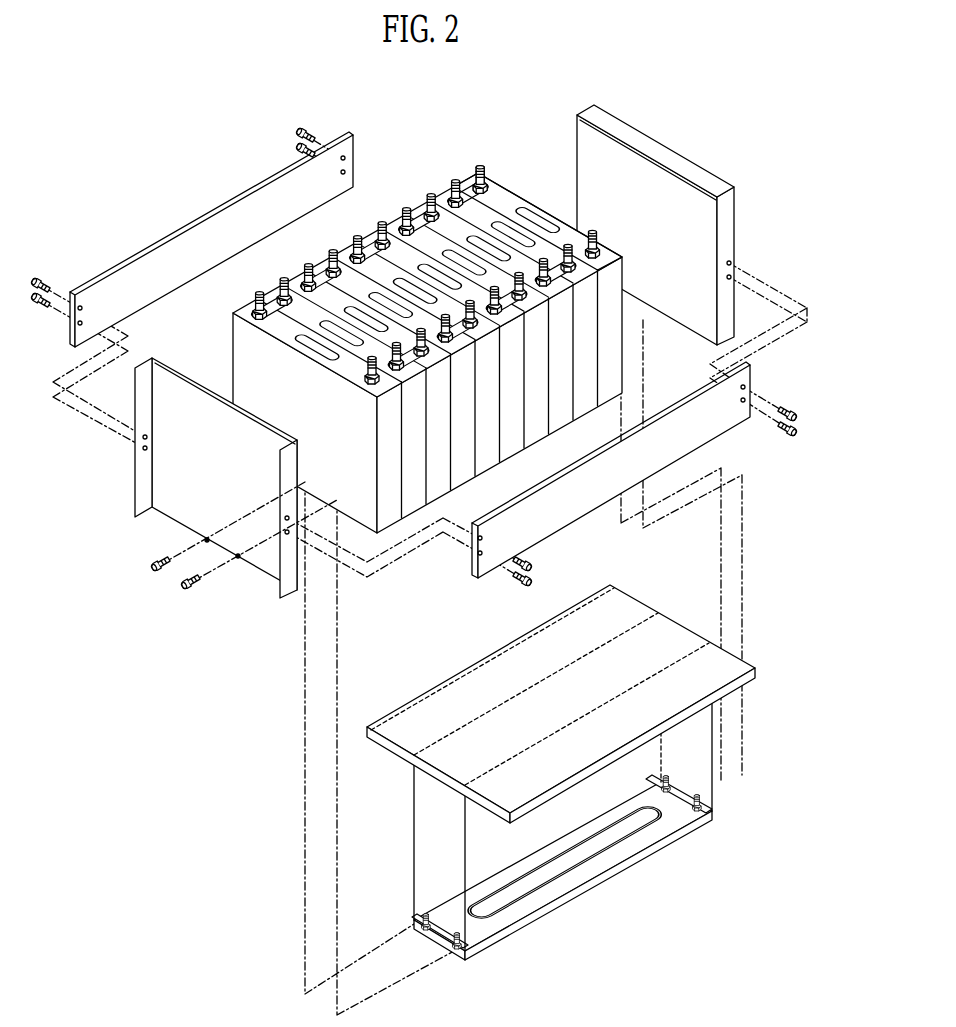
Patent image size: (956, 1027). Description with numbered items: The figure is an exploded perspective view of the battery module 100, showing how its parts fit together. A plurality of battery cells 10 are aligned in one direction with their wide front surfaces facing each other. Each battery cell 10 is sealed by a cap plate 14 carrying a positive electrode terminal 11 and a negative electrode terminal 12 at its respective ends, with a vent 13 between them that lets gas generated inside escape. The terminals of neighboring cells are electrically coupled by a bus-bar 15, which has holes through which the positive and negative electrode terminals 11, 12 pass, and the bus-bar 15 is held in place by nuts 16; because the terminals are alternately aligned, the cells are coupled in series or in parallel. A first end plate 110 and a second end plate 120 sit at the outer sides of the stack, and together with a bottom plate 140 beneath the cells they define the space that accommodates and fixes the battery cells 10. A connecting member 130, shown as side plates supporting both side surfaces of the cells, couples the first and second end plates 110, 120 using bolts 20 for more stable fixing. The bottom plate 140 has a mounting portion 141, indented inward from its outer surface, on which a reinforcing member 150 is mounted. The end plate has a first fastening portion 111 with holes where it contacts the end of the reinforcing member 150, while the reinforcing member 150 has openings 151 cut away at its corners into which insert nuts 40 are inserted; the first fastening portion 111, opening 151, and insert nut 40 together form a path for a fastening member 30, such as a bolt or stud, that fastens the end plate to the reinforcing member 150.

The battery module 100 is at (164, 128).
The battery cell 10 is at (427, 315).
The positive electrode terminal 11 is at (478, 166).
The negative electrode terminal 12 is at (591, 230).
The vent 13 is at (527, 218).
The cap plate 14 is at (538, 187).
The bus-bar 15 is at (277, 292).
The nut 16 is at (307, 277).
The bolt 20 is at (541, 582).
The fastening member 30 is at (185, 589).
The insert nut 40 is at (697, 803).
The first end plate 110 is at (131, 492).
The first fastening portion 111 is at (238, 556).
The second end plate 120 is at (744, 219).
The connecting member 130 is at (206, 213).
The bottom plate 140 is at (561, 768).
The mounting portion 141 is at (438, 779).
The reinforcing member 150 is at (613, 879).
The opening 151 is at (539, 871).